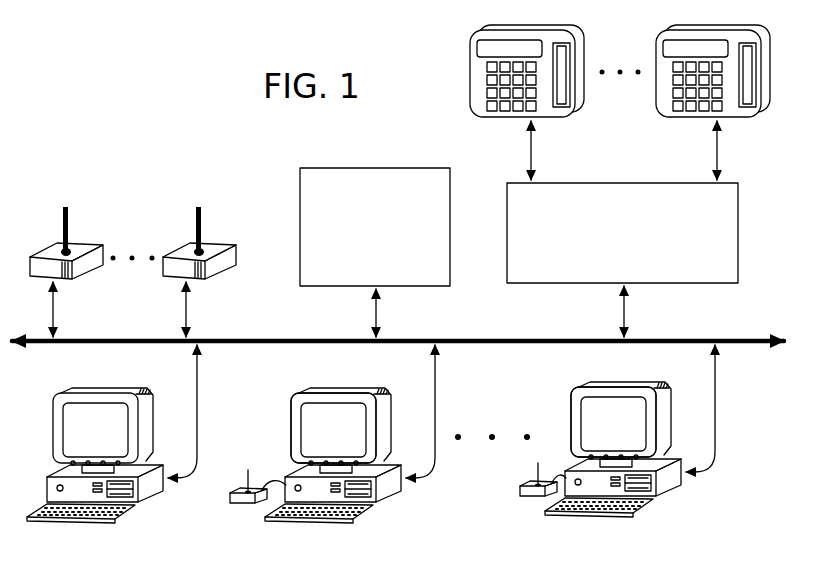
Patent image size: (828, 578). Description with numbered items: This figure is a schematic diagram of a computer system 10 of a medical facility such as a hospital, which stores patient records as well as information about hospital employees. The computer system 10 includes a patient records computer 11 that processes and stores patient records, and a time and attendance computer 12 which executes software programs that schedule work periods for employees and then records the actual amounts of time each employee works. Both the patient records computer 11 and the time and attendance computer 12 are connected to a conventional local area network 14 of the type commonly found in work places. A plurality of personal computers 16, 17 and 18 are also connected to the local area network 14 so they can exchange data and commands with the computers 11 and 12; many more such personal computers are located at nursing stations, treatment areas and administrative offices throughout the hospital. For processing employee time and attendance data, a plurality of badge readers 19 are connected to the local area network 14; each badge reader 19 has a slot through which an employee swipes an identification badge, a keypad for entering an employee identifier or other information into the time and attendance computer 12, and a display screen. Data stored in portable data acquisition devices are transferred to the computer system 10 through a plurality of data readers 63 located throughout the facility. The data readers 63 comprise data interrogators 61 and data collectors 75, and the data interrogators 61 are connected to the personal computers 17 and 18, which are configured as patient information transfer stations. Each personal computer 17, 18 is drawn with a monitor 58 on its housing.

The computer system 10 is at (170, 102).
The patient records computer 11 is at (363, 277).
The time and attendance computer 12 is at (738, 214).
The local area network 14 is at (541, 338).
The personal computer 16 is at (47, 483).
The personal computer 17 is at (286, 480).
The personal computer 18 is at (683, 461).
The badge reader 19 is at (515, 120).
The monitor 58 is at (278, 423).
The data interrogator 61 is at (242, 494).
The data reader 63 is at (255, 187).
The data collector 75 is at (88, 243).